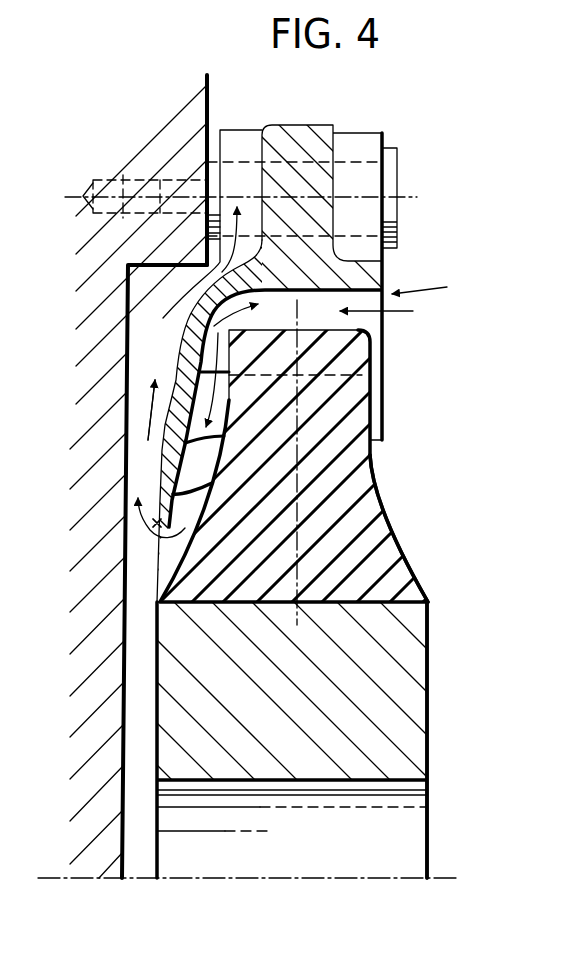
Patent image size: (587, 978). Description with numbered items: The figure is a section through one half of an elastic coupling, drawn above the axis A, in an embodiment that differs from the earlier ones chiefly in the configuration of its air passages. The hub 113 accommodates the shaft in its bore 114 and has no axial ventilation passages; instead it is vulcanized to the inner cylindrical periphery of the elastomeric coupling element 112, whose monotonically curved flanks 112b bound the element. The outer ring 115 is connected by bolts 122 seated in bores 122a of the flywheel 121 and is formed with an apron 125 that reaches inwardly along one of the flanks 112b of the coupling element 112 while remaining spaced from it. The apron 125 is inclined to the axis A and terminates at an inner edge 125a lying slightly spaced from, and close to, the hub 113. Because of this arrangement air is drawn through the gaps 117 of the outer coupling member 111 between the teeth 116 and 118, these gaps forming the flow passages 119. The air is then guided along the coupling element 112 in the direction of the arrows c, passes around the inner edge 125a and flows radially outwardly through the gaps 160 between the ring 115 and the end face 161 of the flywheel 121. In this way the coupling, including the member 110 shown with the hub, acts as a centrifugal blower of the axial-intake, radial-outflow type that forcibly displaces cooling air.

The piston 110 is at (434, 678).
The annular gap 111 is at (433, 292).
The elastomeric coupling element 112 is at (362, 548).
The monotonically curved flanks 112b is at (206, 488).
The hub 113 is at (385, 731).
The bore 114 is at (317, 830).
The outer ring 115 is at (358, 281).
The teeth 116 is at (373, 350).
The gaps 117 is at (357, 322).
The teeth 118 is at (370, 400).
The flow passages 119 is at (182, 333).
The flywheel 121 is at (113, 797).
The bolts 122 is at (345, 176).
The bores 122a is at (148, 200).
The apron 125 is at (181, 362).
The inner edge 125a is at (150, 535).
The gaps 160 is at (251, 148).
The end face 161 is at (210, 78).
The arrows C c is at (112, 401).
The axis A is at (443, 878).